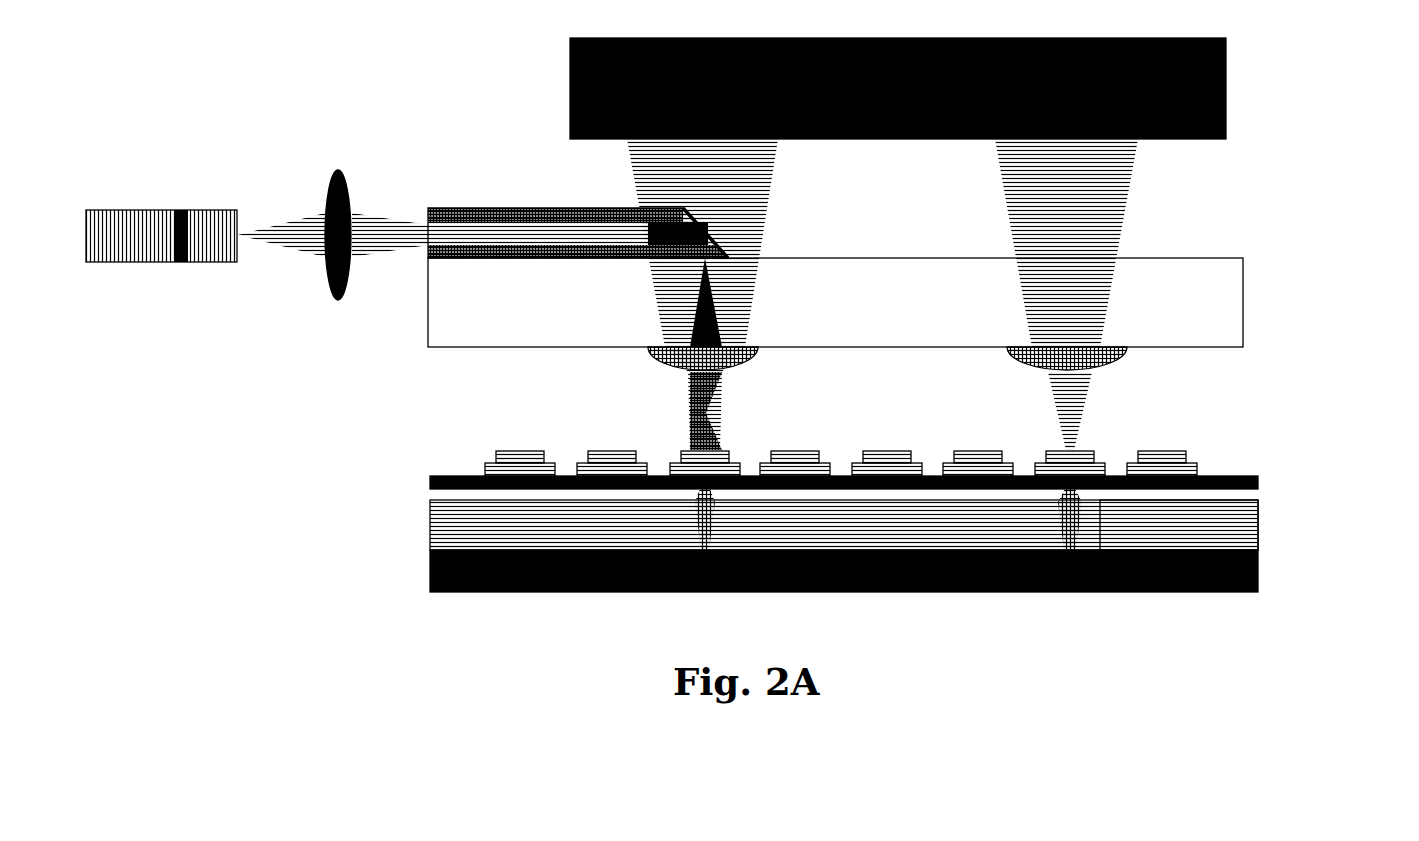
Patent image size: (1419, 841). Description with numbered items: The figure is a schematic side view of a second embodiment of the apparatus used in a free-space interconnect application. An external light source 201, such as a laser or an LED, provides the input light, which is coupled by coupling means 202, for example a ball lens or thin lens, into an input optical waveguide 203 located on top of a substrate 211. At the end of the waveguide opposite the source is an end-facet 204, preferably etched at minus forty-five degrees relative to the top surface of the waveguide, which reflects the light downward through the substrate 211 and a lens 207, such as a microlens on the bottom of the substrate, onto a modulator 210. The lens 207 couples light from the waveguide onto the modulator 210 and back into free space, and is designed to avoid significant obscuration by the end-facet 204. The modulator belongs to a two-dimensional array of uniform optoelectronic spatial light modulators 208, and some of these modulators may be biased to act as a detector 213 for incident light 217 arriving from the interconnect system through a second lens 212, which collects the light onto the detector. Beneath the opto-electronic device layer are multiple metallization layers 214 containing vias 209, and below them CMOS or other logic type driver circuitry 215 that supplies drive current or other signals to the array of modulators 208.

The external light source 201 is at (175, 186).
The coupling means 202 is at (338, 147).
The input optical waveguide 203 is at (543, 182).
The end-facet 204 is at (739, 215).
The lens 207 is at (620, 375).
The array of optoelectronic spatial light modulators 208 is at (442, 460).
The vias 209 is at (659, 528).
The modulator 210 is at (743, 445).
The substrate 211 is at (1263, 293).
The lens 212 is at (1133, 370).
The detector 213 is at (1108, 443).
The metallization layers 214 is at (1273, 518).
The driver circuitry 215 is at (1273, 573).
The incident light 217 is at (1173, 203).